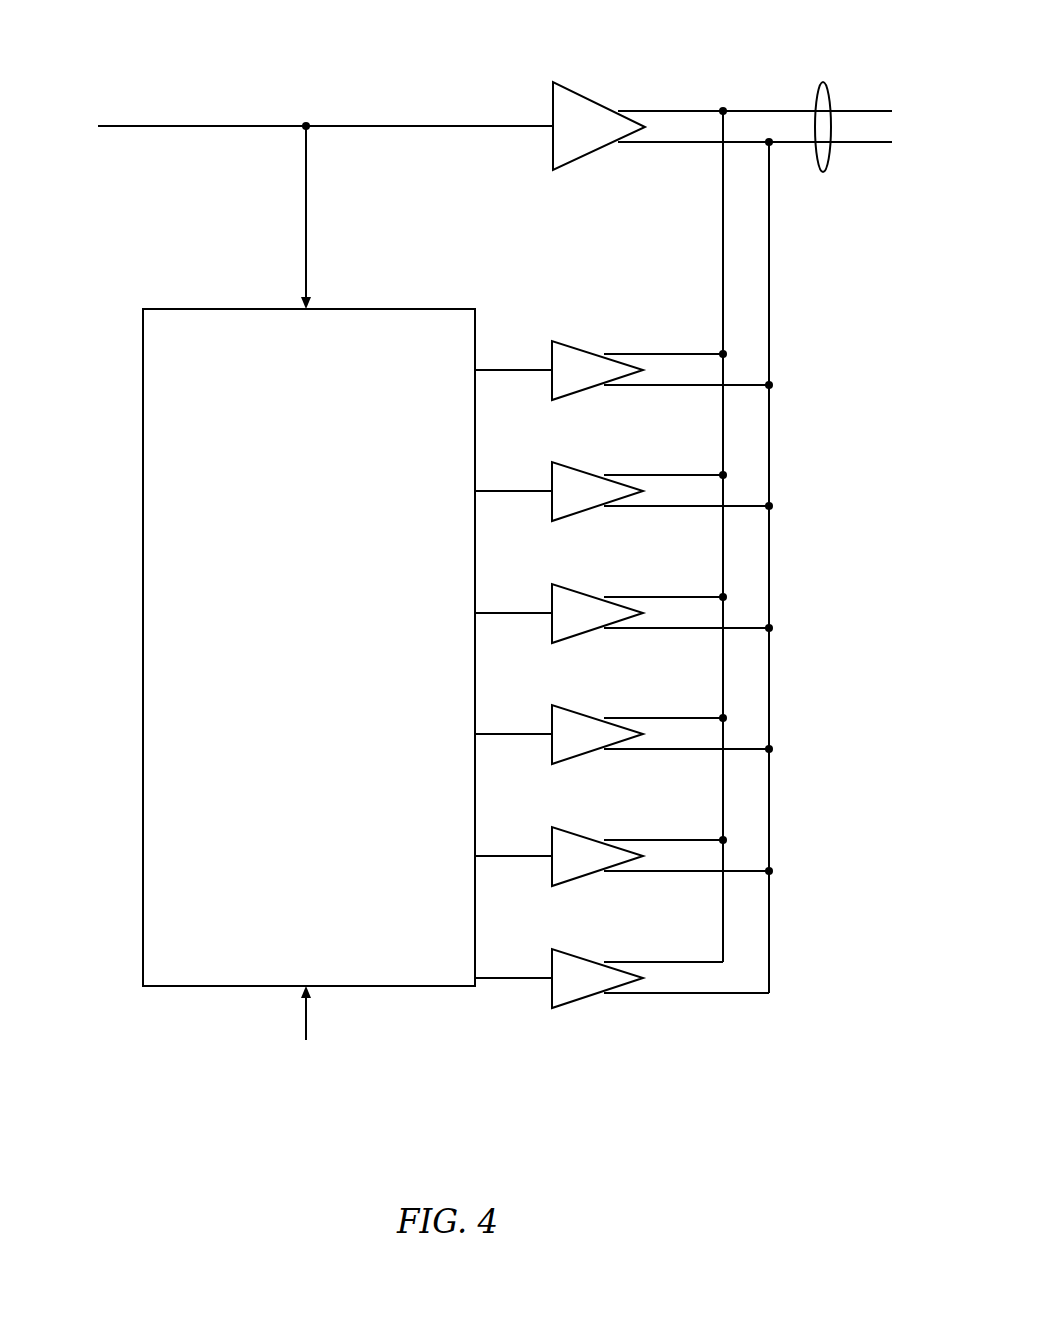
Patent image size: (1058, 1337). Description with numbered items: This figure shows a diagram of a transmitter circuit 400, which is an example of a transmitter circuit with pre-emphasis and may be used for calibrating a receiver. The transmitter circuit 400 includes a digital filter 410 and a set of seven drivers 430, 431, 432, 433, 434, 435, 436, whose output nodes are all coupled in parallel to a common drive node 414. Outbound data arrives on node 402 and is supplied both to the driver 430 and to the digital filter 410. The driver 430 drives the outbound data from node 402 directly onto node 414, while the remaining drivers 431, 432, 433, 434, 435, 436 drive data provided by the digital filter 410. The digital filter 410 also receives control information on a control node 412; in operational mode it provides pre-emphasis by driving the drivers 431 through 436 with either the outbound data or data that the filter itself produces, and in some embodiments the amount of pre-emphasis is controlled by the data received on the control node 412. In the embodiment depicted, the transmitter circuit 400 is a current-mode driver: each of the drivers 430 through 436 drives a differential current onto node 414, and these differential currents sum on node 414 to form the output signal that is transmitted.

The transmitter circuit 400 is at (649, 1087).
The outbound data node 402 is at (248, 126).
The digital filter 410 is at (143, 554).
The control node 412 is at (306, 1017).
The drive node 414 is at (823, 82).
The driver 430 is at (585, 92).
The driver 431 is at (598, 353).
The driver 432 is at (598, 474).
The driver 433 is at (604, 596).
The driver 434 is at (598, 717).
The driver 435 is at (598, 839).
The driver 436 is at (598, 961).